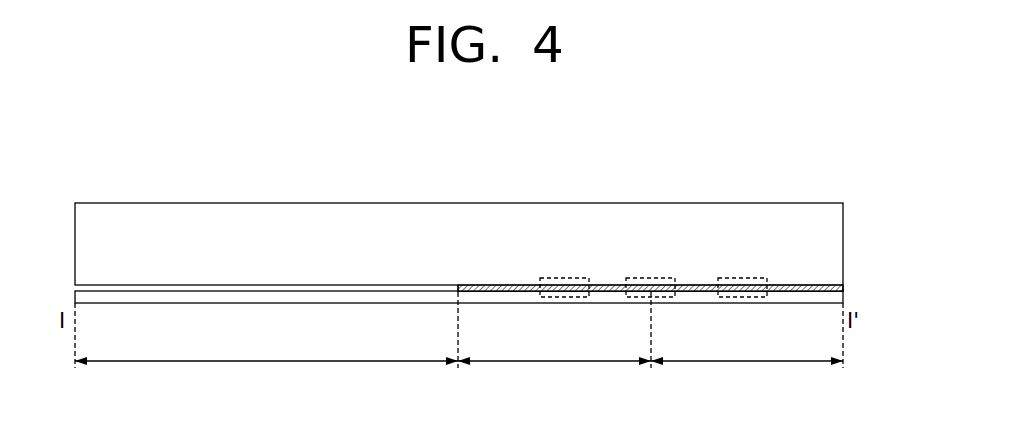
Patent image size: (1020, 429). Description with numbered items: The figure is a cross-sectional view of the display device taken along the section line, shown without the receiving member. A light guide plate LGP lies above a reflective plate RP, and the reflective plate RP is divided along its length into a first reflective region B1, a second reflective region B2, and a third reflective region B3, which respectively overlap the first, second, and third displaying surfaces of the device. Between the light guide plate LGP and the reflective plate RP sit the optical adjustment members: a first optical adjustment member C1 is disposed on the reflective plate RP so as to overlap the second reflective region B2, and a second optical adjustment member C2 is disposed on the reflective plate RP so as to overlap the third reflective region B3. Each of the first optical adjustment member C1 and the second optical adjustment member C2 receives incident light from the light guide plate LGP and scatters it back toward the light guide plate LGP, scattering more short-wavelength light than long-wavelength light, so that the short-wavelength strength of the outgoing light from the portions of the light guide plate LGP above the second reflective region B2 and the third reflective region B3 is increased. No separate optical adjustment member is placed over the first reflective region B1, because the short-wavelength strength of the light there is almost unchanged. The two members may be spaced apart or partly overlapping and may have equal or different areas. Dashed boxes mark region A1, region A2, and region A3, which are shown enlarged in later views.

The light guide plate LGP is at (835, 243).
The reflective plate RP is at (835, 297).
The first optical adjustment member C1 is at (493, 285).
The second optical adjustment member C2 is at (810, 285).
The region A1 is at (565, 278).
The region A2 is at (743, 278).
The region A3 is at (651, 278).
The first reflective region B1 is at (266, 378).
The second reflective region B2 is at (554, 378).
The third reflective region B3 is at (747, 378).